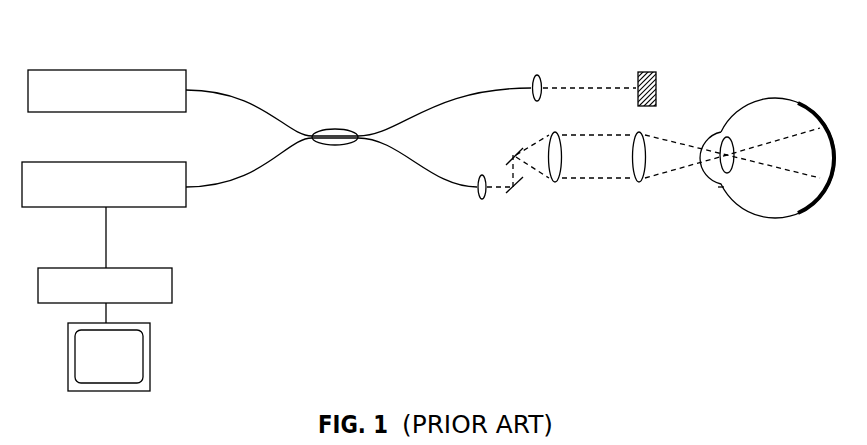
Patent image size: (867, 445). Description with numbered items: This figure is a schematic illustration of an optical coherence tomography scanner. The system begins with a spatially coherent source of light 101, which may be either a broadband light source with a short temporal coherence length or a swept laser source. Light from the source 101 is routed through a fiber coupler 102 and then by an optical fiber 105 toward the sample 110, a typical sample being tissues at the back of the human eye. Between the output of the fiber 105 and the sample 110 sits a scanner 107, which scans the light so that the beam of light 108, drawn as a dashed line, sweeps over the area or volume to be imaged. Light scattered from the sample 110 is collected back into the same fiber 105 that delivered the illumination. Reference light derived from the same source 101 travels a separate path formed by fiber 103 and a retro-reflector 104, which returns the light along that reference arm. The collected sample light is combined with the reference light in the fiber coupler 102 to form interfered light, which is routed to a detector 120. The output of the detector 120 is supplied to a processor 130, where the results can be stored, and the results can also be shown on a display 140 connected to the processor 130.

The spatially coherent source of light 101 is at (105, 68).
The fiber coupler 102 is at (327, 145).
The fiber 103 is at (447, 96).
The retro-reflector 104 is at (653, 60).
The optical fiber 105 is at (428, 186).
The scanner 107 is at (527, 195).
The beam of light 108 is at (770, 175).
The sample 110 is at (795, 95).
The detector 120 is at (138, 212).
The processor 130 is at (172, 286).
The display 140 is at (150, 357).